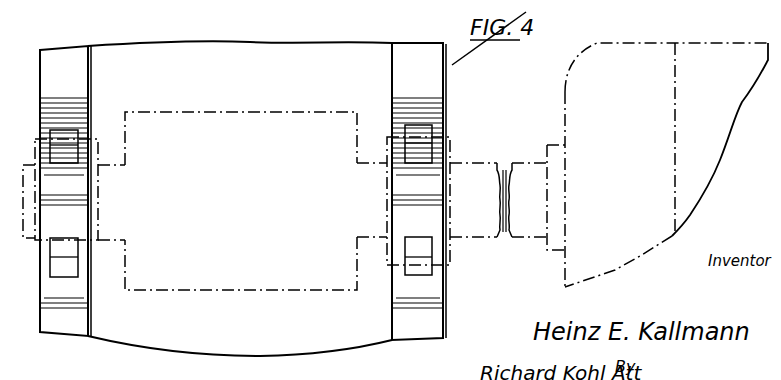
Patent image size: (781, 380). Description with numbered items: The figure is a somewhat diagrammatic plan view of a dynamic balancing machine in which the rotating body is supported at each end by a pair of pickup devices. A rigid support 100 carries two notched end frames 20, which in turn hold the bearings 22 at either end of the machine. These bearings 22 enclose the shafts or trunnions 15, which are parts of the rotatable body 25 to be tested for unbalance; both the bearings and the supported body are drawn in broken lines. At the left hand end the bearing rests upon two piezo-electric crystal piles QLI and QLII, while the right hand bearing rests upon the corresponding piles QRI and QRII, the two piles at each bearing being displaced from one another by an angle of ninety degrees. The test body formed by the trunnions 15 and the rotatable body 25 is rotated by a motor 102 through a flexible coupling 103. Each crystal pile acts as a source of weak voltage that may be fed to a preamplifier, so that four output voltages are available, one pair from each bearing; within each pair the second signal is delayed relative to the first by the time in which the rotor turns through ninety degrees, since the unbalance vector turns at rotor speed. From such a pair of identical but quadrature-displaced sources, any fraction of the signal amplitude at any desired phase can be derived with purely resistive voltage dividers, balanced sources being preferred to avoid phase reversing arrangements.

The rigid support 100 is at (319, 27).
The notched end frames 20 is at (80, 297).
The bearings 22 is at (100, 128).
The rotatable body 25 is at (228, 119).
The shafts or trunnions 15 is at (112, 170).
The flexible coupling 103 is at (504, 165).
The motor 102 is at (613, 57).
The piezo-electric crystal pile QLI is at (65, 133).
The piezo-electric crystal pile QRI is at (410, 128).
The piezo-electric crystal pile QLII is at (70, 252).
The piezo-electric crystal pile QRII is at (425, 252).